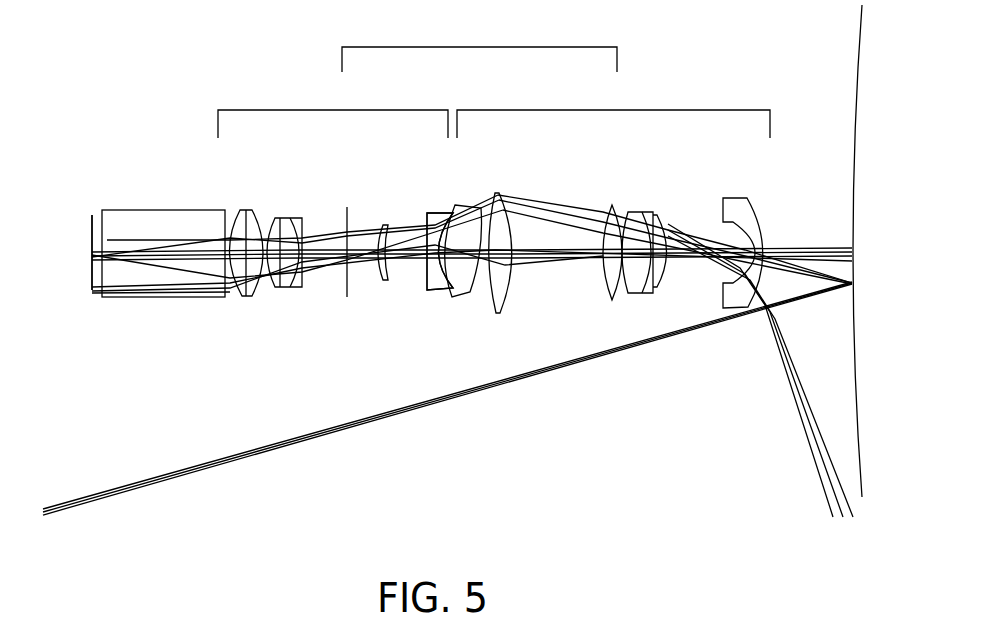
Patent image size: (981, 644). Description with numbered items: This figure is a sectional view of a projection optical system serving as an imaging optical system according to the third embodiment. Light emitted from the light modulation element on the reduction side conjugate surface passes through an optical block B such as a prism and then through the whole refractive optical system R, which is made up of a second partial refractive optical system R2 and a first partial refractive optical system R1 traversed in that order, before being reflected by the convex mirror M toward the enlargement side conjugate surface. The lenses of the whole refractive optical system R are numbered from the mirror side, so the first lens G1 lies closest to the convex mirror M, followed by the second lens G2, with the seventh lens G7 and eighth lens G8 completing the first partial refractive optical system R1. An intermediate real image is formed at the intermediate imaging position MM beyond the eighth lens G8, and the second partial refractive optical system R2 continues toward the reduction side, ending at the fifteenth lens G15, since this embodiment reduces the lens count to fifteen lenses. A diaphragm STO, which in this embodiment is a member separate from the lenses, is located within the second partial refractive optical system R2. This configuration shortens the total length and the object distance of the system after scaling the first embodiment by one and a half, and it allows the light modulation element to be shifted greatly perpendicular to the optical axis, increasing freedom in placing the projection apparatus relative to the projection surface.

The convex mirror M is at (862, 53).
The whole refractive optical system R is at (479, 47).
The first partial refractive optical system R1 is at (613, 111).
The second partial refractive optical system R2 is at (333, 111).
The first lens G1 is at (733, 198).
The second lens G2 is at (657, 215).
The seventh lens G7 is at (460, 205).
The eighth lens G8 is at (440, 213).
The fifteenth lens G15 is at (242, 210).
The diaphragm STO is at (350, 287).
The intermediate imaging position MM is at (455, 275).
The optical block B is at (145, 297).